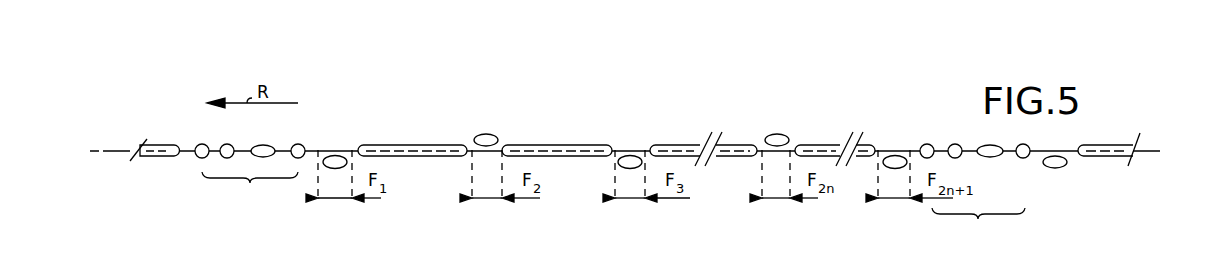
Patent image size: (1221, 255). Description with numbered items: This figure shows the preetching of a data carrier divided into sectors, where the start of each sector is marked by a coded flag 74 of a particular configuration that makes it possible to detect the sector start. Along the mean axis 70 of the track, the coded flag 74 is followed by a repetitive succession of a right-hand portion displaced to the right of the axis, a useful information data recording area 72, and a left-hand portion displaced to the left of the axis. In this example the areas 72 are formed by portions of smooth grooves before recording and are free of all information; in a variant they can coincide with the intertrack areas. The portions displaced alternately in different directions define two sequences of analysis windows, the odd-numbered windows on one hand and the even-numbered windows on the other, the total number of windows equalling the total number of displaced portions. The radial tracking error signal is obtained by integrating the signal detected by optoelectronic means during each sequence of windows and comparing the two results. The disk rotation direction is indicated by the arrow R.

The mean axis of the tracks 70 is at (121, 151).
The useful information data recording area 72 is at (142, 146).
The coded flag 74 is at (613, 207).